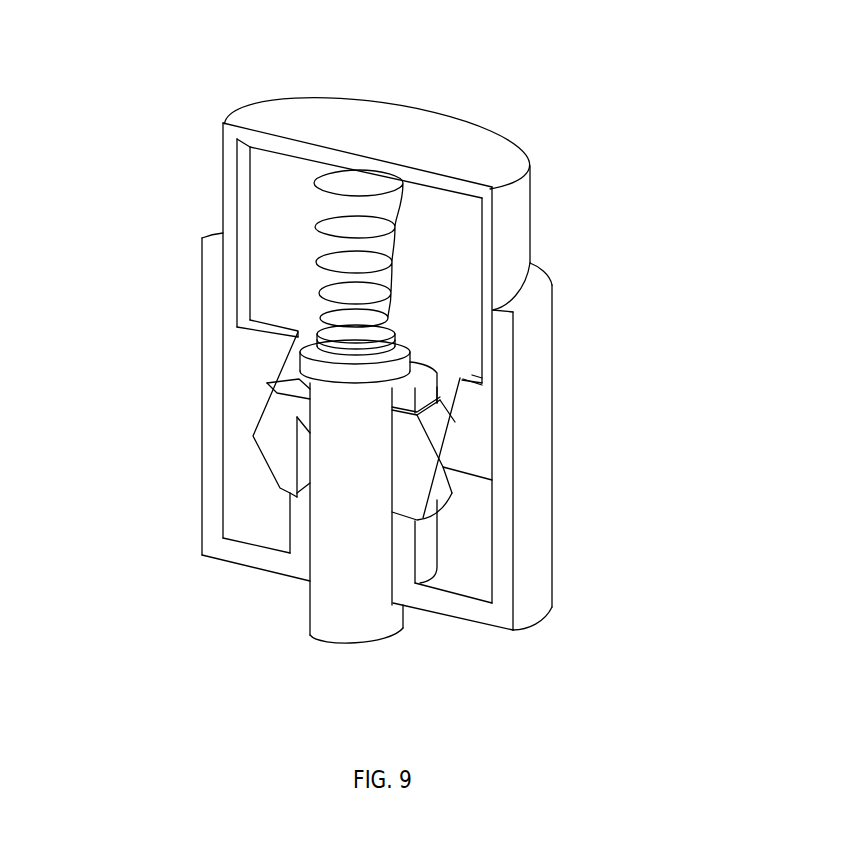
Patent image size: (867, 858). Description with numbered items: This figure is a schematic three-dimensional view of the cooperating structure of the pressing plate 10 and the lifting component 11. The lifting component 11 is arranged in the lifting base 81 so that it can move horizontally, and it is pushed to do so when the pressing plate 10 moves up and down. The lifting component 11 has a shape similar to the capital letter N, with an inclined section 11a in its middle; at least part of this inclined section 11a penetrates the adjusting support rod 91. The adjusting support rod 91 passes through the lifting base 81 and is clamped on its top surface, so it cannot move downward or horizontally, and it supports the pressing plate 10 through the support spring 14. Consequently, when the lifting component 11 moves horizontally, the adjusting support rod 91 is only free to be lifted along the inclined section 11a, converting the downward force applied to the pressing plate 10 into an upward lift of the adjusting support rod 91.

The pressing plate 10 is at (390, 133).
The support spring 14 is at (397, 255).
The lifting component 11 is at (275, 443).
The inclined section 11a is at (307, 410).
The lifting base 81 is at (298, 522).
The adjusting support rod 91 is at (342, 610).